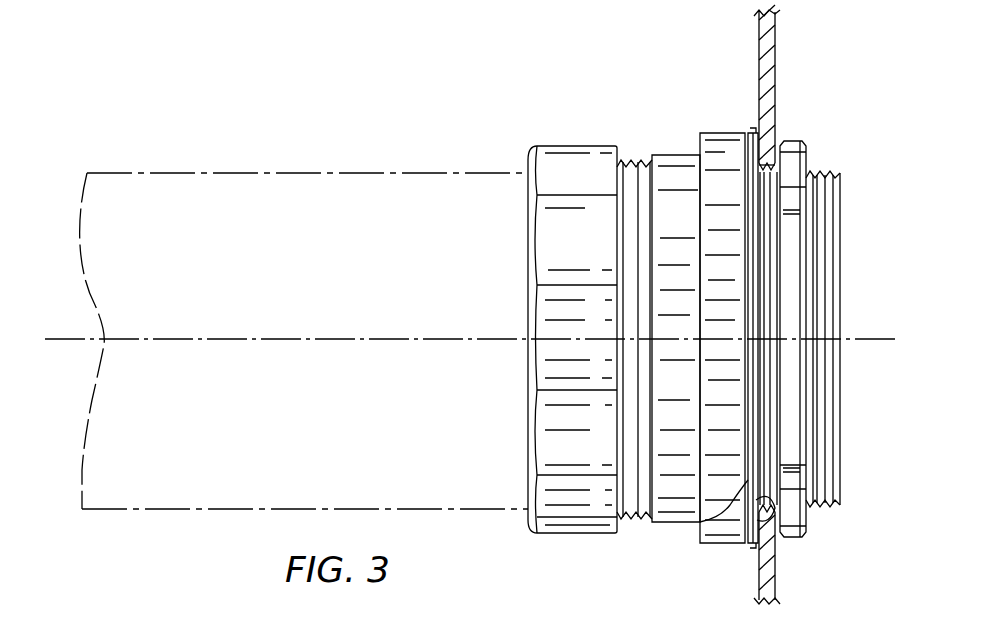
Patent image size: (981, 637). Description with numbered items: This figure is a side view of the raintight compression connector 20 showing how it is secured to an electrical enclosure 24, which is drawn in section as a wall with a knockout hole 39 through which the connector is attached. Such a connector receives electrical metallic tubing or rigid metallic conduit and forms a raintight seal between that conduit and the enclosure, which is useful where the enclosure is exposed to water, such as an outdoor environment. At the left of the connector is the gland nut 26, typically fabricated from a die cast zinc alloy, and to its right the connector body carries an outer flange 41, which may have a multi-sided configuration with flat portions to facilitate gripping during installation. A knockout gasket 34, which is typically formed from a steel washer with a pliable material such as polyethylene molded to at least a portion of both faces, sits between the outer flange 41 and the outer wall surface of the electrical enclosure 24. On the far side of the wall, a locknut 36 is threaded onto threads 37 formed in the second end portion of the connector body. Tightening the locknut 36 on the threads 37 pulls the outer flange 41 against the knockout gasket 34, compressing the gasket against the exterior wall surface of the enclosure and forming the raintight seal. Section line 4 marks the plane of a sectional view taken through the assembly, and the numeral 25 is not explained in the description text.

The section line 4- 4 is at (45, 287).
The raintight compression connector 20 is at (653, 130).
The electrical enclosure 24 is at (777, 47).
The aperture in wall 25 is at (757, 72).
The gland nut 26 is at (568, 155).
The knockout gasket 34 is at (776, 508).
The locknut 36 is at (792, 140).
The threads 37 is at (814, 178).
The knockout hole 39 is at (748, 500).
The outer flange 41 is at (722, 133).